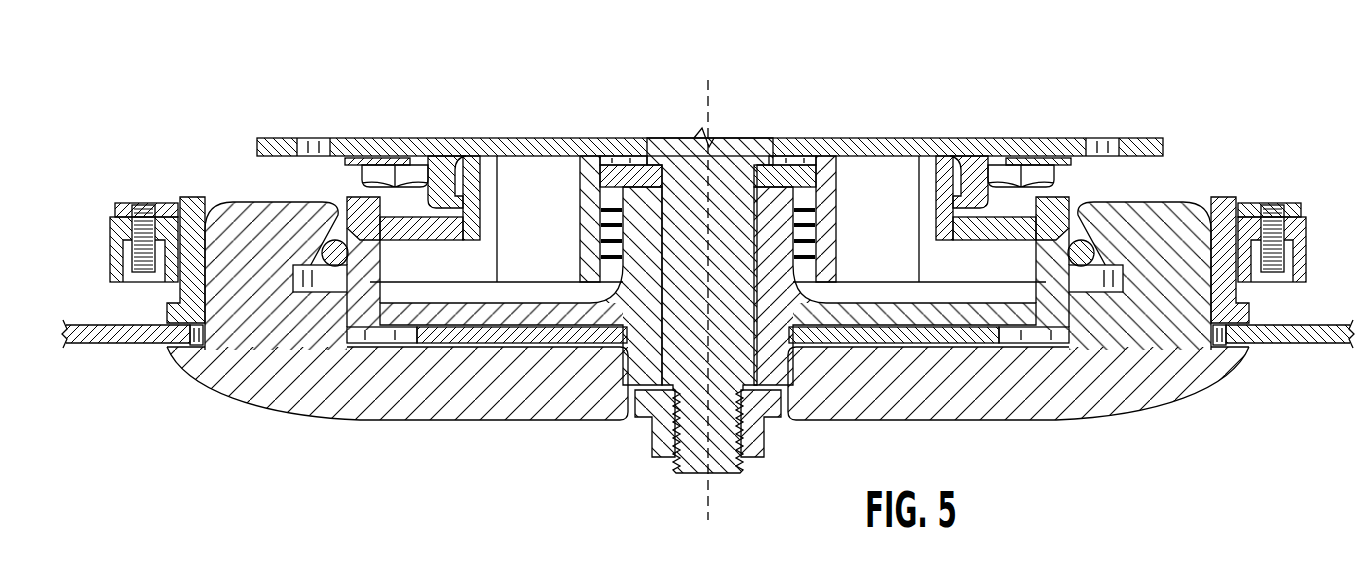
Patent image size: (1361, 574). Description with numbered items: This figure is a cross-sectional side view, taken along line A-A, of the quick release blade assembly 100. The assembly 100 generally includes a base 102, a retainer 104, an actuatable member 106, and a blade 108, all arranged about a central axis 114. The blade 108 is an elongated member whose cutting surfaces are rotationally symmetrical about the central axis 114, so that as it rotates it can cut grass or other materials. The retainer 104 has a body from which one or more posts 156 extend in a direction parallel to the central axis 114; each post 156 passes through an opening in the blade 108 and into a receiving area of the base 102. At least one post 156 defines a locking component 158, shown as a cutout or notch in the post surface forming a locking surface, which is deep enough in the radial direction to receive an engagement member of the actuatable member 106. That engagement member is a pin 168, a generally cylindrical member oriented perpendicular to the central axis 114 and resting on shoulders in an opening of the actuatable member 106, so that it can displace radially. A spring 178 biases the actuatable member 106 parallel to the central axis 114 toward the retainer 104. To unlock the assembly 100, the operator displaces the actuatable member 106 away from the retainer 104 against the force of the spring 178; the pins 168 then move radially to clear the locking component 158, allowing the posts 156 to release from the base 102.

The quick release blade assembly 100 is at (1175, 94).
The base 102 is at (193, 208).
The retainer 104 is at (478, 407).
The actuatable member 106 is at (905, 192).
The blade 108 is at (147, 340).
The central axis 114 is at (708, 500).
The posts 156 is at (258, 227).
The locking component 158 is at (300, 293).
The pin 168 is at (337, 240).
The spring 178 is at (609, 152).